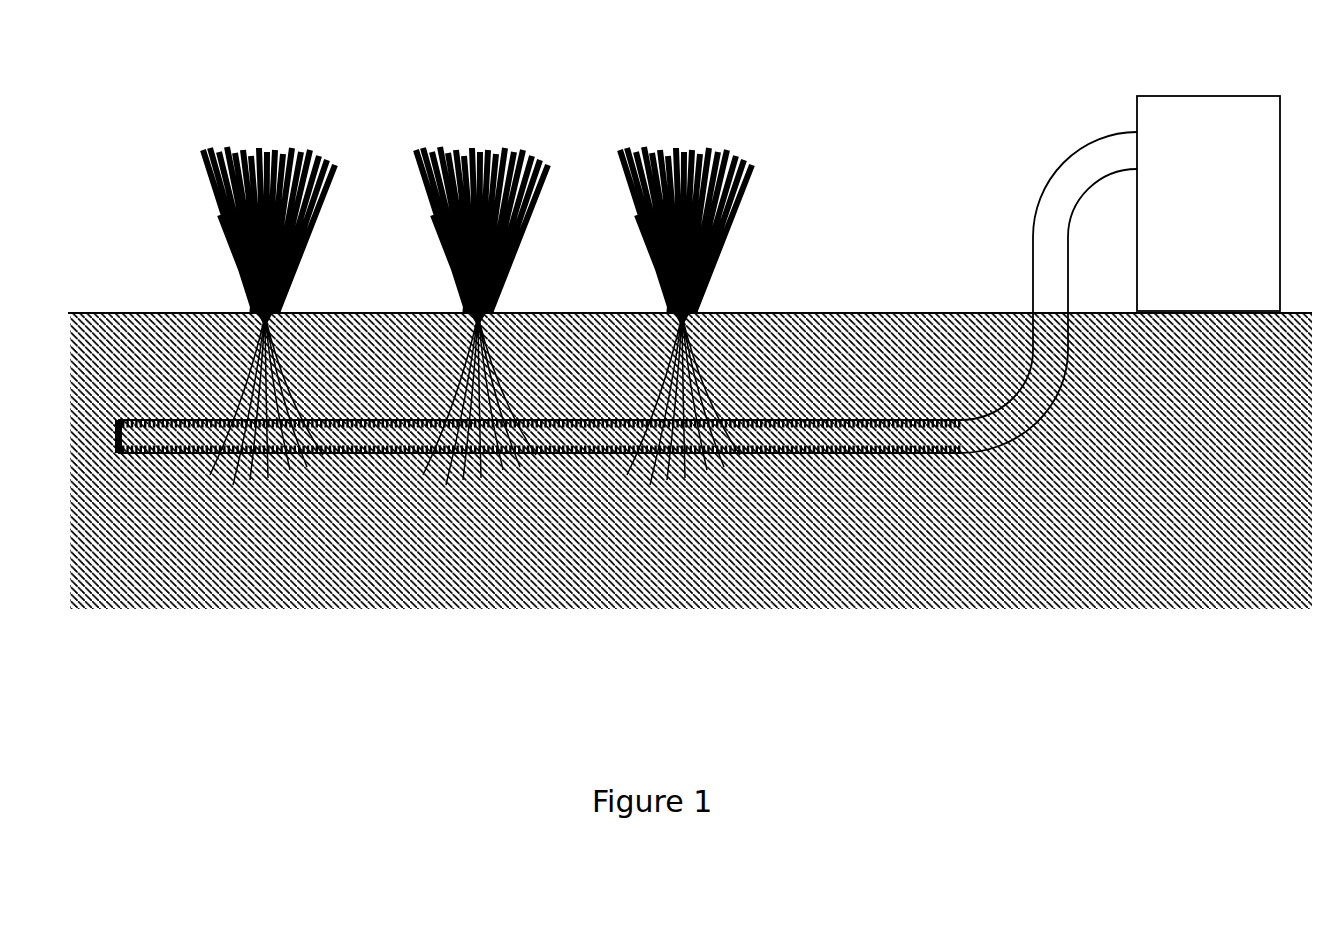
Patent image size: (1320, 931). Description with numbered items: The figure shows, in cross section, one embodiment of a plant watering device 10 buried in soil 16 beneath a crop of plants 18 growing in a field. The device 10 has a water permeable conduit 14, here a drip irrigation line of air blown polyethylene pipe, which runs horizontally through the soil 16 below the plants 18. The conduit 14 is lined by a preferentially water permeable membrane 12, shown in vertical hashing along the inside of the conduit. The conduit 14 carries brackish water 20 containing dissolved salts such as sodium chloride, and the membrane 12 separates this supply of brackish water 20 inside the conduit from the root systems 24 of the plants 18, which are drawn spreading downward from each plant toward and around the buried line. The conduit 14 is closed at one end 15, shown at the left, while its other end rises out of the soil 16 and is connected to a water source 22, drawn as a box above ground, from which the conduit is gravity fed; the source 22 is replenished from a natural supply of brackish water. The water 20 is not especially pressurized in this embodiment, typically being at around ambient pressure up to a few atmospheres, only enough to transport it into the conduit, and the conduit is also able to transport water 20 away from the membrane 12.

The plant watering device 10 is at (930, 546).
The preferentially water permeable membrane 12 is at (755, 421).
The water permeable conduit 14 is at (882, 418).
The end 15 is at (114, 441).
The soil 16 is at (160, 565).
The plant 18 is at (222, 140).
The brackish water 20 is at (588, 436).
The water source 22 is at (1198, 130).
The root system 24 is at (300, 468).